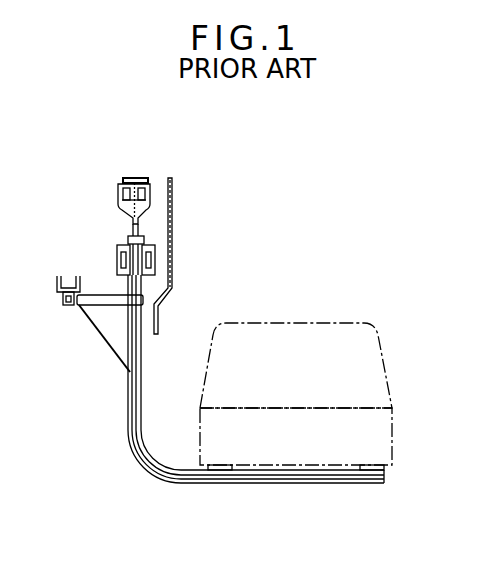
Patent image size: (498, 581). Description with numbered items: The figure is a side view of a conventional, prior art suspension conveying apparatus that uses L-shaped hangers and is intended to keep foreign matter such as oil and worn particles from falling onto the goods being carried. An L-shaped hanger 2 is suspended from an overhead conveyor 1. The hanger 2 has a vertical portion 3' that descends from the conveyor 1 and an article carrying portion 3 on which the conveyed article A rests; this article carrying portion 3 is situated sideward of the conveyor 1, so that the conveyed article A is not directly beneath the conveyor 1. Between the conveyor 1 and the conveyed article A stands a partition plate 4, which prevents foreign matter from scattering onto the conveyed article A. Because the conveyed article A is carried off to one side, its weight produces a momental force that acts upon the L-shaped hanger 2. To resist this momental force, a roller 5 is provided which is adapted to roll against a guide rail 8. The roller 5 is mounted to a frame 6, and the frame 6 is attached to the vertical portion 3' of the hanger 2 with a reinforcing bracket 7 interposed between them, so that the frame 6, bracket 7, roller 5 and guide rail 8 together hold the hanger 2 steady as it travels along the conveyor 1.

The overhead conveyor 1 is at (131, 233).
The L-shaped hanger 2 is at (230, 405).
The article carrying portion 3 is at (282, 502).
The vertical portion 3' is at (149, 352).
The partition plate 4 is at (172, 229).
The roller 5 is at (62, 300).
The frame 6 is at (108, 300).
The reinforcing bracket 7 is at (114, 352).
The guide rail 8 is at (62, 278).
The conveyed article A is at (382, 343).